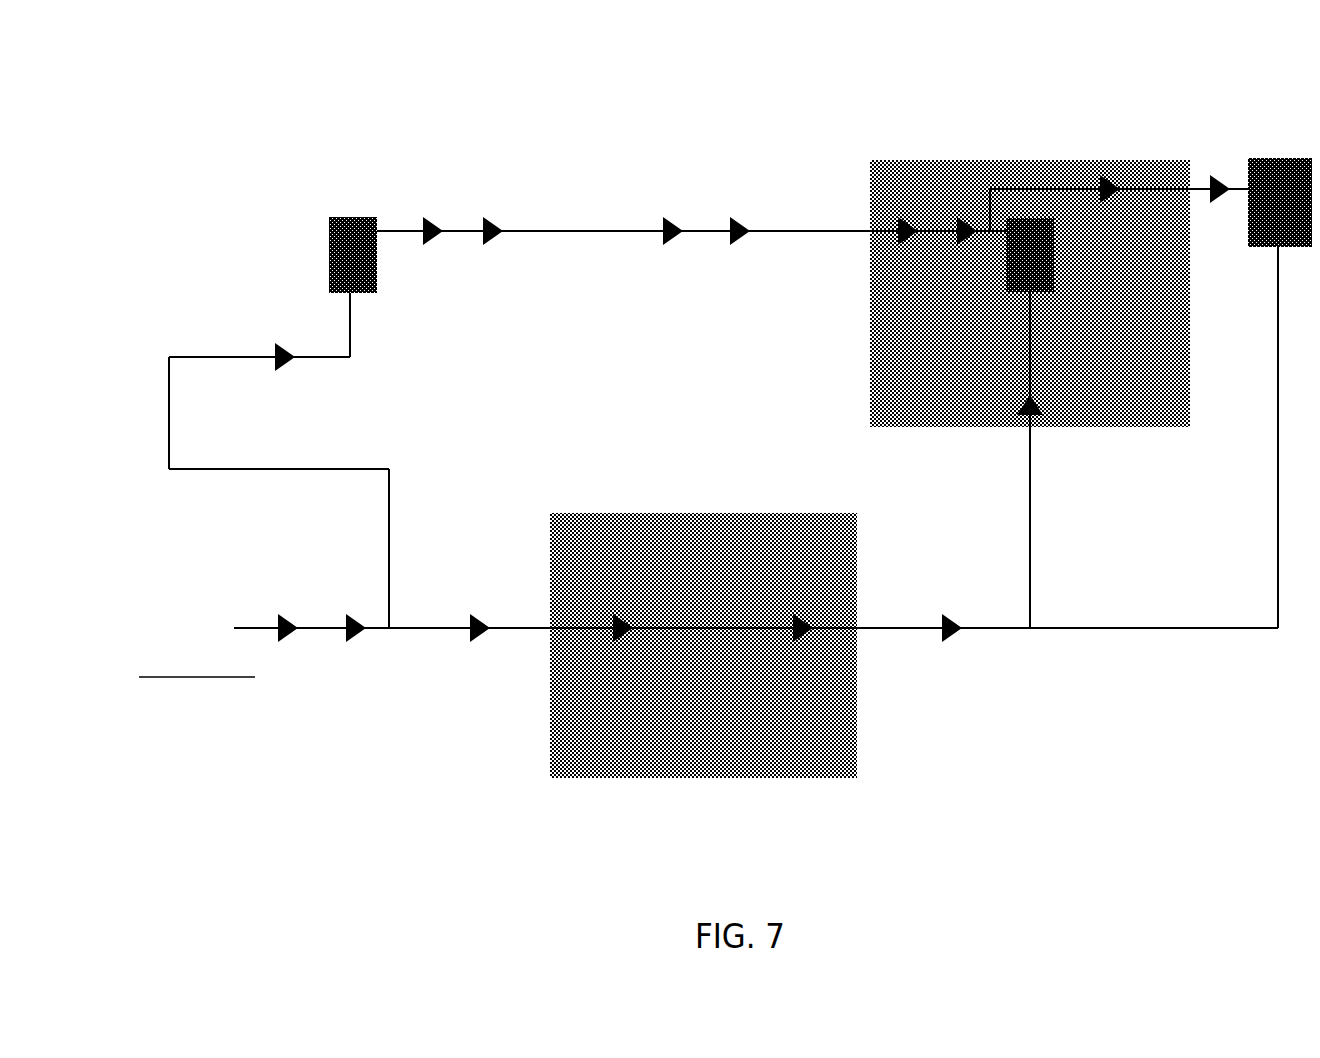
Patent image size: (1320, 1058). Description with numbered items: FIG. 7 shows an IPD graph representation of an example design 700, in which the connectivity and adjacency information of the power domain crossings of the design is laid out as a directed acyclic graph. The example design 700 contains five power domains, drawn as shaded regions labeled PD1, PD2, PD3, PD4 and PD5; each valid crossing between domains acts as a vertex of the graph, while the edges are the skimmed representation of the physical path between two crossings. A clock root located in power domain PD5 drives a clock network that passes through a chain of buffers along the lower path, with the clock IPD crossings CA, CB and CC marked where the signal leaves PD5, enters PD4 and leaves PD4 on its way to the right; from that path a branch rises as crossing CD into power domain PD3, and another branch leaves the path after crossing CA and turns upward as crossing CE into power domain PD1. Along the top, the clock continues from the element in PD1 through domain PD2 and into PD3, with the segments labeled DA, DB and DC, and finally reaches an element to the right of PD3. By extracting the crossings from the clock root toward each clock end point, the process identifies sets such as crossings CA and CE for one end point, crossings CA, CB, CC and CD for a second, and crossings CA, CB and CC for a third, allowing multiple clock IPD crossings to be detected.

The example design 700 is at (257, 49).
The power domain PD1 is at (389, 267).
The power domain PD2 is at (706, 204).
The power domain PD3 is at (1030, 293).
The power domain PD4 is at (703, 645).
The power domain PD5 is at (219, 602).
The clock IPD crossing CA is at (322, 651).
The clock IPD crossing CB is at (551, 649).
The clock IPD crossing CC is at (877, 649).
The clock IPD crossing CD is at (1025, 521).
The clock IPD crossing CE is at (196, 413).
The clock net DA is at (583, 216).
The clock net DB is at (824, 214).
The clock net DC is at (1165, 210).